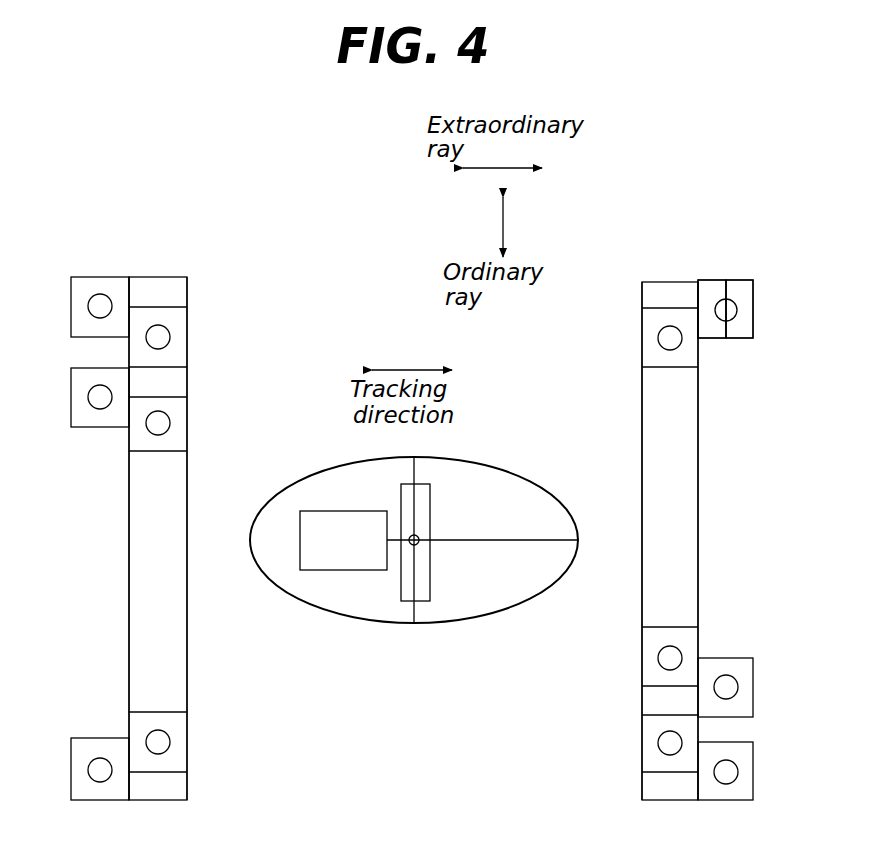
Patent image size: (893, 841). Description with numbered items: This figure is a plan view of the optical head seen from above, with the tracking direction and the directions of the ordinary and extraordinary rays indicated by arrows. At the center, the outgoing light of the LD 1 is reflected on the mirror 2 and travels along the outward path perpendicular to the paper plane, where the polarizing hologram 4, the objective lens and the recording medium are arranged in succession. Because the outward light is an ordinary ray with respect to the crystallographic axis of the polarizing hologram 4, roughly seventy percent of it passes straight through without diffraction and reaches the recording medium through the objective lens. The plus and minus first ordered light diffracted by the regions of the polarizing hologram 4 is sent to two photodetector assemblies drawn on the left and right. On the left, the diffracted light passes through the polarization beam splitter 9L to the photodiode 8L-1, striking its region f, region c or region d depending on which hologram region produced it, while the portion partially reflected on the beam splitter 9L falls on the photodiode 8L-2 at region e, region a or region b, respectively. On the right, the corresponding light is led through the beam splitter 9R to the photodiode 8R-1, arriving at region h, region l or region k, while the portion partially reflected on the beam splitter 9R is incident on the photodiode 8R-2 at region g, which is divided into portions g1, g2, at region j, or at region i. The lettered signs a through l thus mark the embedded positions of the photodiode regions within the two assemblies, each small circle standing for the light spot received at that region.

The LD 1 is at (362, 511).
The mirror 2 is at (431, 506).
The polarizing hologram 4 is at (486, 619).
The photodiode 8L-1 is at (173, 510).
The photodiode 8L-2 is at (128, 260).
The polarization beam splitter 9L is at (187, 260).
The photodiode 8R-1 is at (645, 510).
The photodiode 8R-2 is at (753, 262).
The beam splitter 9R is at (697, 262).
The region a is at (73, 312).
The region b is at (73, 398).
The region c is at (177, 338).
The region d is at (177, 424).
The region e is at (73, 773).
The region f is at (177, 743).
The region g is at (803, 305).
The region portion g1 is at (712, 331).
The region portion g2 is at (748, 317).
The region h is at (645, 339).
The region i is at (747, 690).
The region j is at (747, 776).
The region k is at (645, 660).
The region l is at (645, 746).